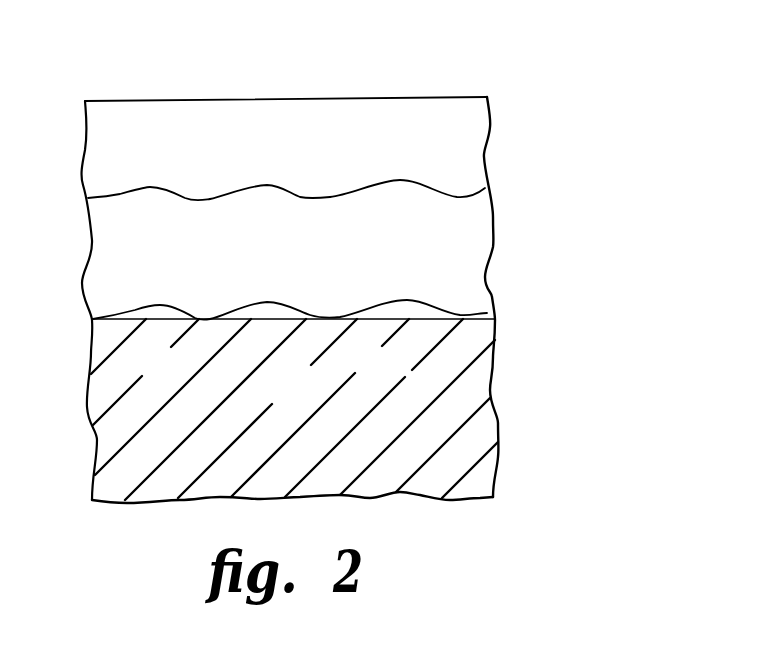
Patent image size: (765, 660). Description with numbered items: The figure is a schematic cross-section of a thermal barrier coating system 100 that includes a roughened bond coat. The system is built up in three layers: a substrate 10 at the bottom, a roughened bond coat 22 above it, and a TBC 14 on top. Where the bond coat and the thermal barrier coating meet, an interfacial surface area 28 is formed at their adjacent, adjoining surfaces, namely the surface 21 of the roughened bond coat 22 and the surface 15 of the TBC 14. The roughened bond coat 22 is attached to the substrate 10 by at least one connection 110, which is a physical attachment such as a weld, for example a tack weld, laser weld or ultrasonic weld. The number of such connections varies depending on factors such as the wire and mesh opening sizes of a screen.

The thermal barrier coating system 100 is at (528, 125).
The TBC 14 is at (319, 143).
The surface of the TBC 15 is at (157, 187).
The interfacial surface area 28 is at (358, 192).
The surface of the roughened bond coat 21 is at (262, 188).
The roughened bond coat 22 is at (321, 280).
The substrate 10 is at (308, 403).
The connection 110 is at (200, 320).